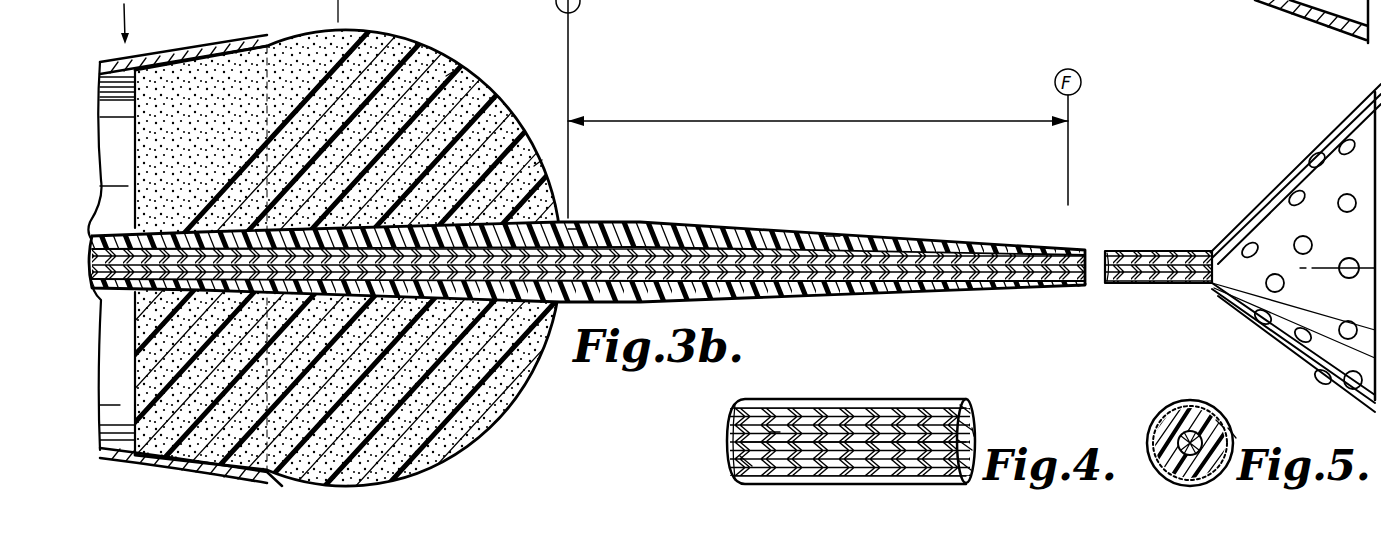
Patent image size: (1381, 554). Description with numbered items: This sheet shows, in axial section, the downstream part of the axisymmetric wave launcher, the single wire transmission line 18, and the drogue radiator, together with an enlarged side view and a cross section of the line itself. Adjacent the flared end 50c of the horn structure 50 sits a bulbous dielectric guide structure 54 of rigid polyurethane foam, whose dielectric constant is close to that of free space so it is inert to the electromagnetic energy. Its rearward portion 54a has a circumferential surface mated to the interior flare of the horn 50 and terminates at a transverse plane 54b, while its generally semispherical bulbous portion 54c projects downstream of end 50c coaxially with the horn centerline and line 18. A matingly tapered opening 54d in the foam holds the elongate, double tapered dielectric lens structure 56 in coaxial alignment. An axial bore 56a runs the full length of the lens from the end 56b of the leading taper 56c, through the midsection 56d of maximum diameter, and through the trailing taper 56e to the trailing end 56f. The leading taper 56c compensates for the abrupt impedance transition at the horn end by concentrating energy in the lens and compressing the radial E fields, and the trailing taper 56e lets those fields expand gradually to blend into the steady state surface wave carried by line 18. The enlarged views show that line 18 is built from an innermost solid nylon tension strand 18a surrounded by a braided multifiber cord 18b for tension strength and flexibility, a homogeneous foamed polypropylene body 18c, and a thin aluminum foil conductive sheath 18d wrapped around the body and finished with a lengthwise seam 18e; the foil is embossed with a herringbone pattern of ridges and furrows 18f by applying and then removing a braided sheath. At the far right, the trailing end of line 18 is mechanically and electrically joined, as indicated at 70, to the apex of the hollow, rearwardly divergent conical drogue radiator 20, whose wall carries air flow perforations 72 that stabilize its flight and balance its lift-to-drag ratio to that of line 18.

In FIG. 3B, the horn structure 50 is at (106, 55).
In FIG. 3B, the flared end of horn 50c is at (285, 40).
In FIG. 3B, the dielectric guide structure 54 is at (520, 110).
In FIG. 3B, the rearward portion of guide structure 54a is at (236, 48).
In FIG. 3B, the transverse plane 54b is at (135, 62).
In FIG. 3B, the bulbous portion 54c is at (452, 72).
In FIG. 3B, the tapered opening 54d is at (538, 162).
In FIG. 3B, the dielectric lens structure 56 is at (665, 228).
In FIG. 3B, the axial bore 56a is at (718, 232).
In FIG. 3B, the end of leading taper 56b is at (143, 216).
In FIG. 3B, the leading taper 56c is at (297, 227).
In FIG. 3B, the midsection 56d is at (574, 226).
In FIG. 3B, the trailing taper 56e is at (833, 231).
In FIG. 3B, the trailing end 56f is at (1079, 288).
In FIG. 3B, the single wire transmission line 18 is at (1150, 253).
In FIG. 4, the single wire transmission line 18 is at (855, 400).
In FIG. 5, the single wire transmission line 18 is at (1135, 438).
In FIG. 5, the solid nylon tension strand 18a is at (1220, 424).
In FIG. 5, the braided multifiber cord 18b is at (1189, 428).
In FIG. 5, the foamed synthetic body 18c is at (1160, 420).
In FIG. 4, the conductive sheath 18d is at (745, 461).
In FIG. 5, the conductive sheath 18d is at (1233, 433).
In FIG. 4, the lengthwise seam 18e is at (775, 428).
In FIG. 4, the herringbone embossed surface 18f is at (976, 432).
In FIG. 3B, the joint 70 is at (1210, 255).
In FIG. 3B, the conical drogue radiator 20 is at (1267, 197).
In FIG. 3B, the air flow perforations 72 is at (1340, 148).